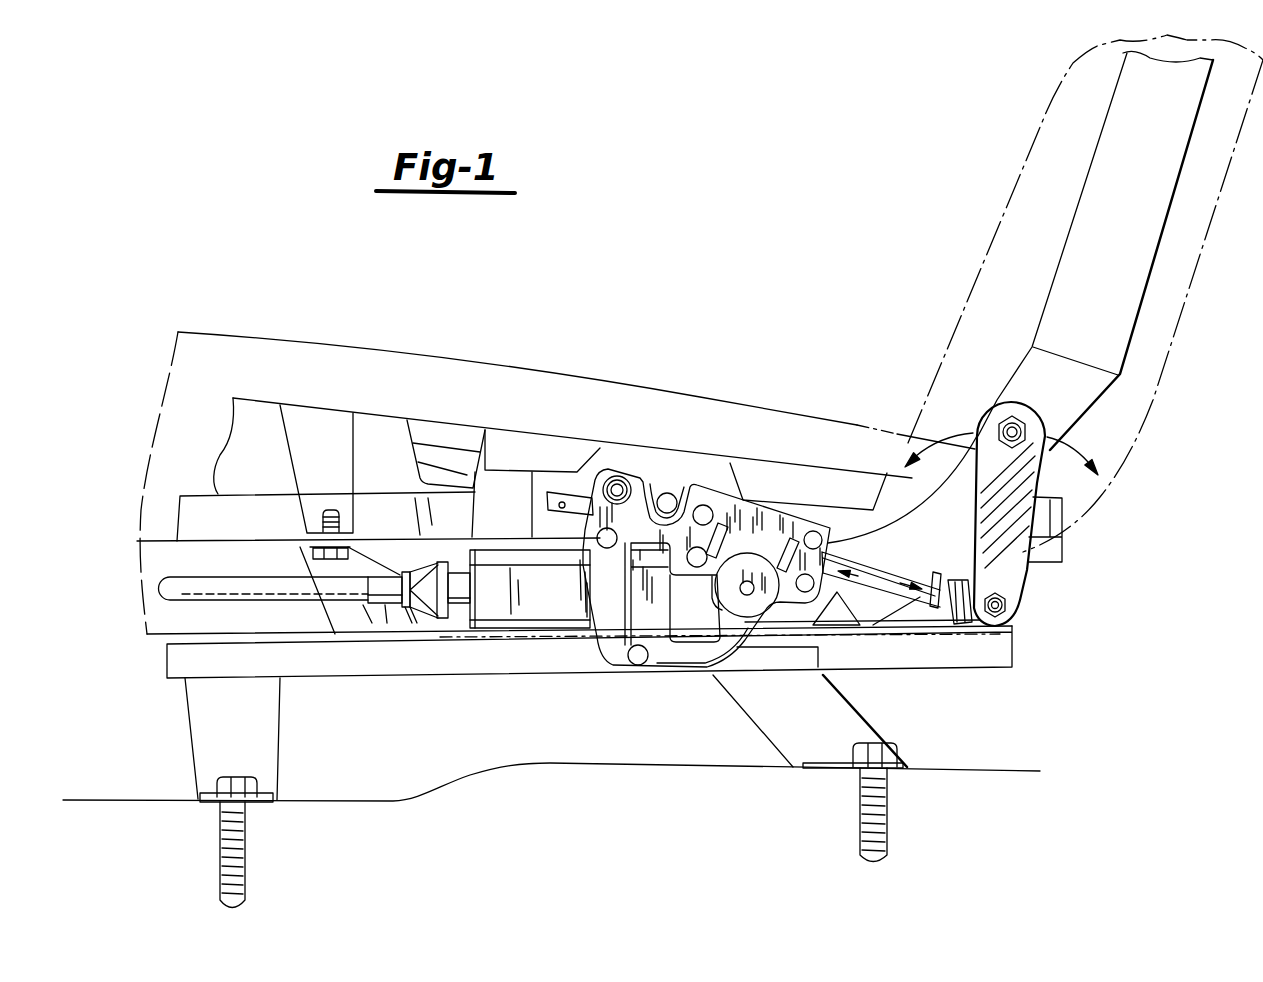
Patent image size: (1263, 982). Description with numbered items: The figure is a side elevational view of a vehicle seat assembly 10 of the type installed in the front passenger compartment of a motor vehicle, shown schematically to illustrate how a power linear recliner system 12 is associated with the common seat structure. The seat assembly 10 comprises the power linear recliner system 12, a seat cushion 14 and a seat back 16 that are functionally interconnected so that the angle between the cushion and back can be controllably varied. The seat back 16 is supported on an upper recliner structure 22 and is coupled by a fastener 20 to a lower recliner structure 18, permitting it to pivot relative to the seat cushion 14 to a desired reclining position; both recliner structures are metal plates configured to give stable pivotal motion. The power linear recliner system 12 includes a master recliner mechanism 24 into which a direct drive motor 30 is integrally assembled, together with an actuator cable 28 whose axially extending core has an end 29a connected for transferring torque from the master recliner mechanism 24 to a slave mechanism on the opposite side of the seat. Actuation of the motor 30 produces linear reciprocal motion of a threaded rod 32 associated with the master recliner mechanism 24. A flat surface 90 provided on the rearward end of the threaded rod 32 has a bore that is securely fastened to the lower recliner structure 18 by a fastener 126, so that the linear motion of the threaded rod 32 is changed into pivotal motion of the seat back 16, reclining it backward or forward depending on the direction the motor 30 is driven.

The vehicle seat assembly 10 is at (826, 234).
The power linear recliner system 12 is at (490, 647).
The seat cushion 14 is at (507, 367).
The seat back 16 is at (948, 326).
The lower recliner structure 18 is at (1030, 481).
The fastener 20 is at (1030, 432).
The upper recliner structure 22 is at (1130, 283).
The master recliner mechanism 24 is at (617, 658).
The actuator cable 28 is at (282, 587).
The end of cable core 29a is at (468, 603).
The direct drive motor 30 is at (560, 607).
The threaded rod 32 is at (937, 547).
The flat surface 90 is at (963, 604).
The fastener 126 is at (1005, 605).